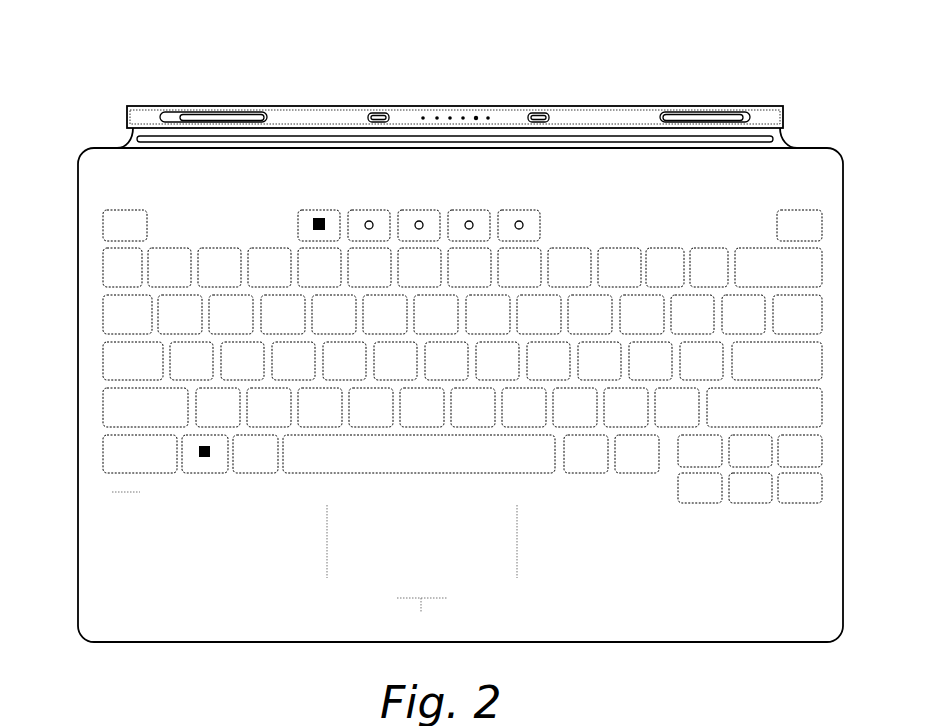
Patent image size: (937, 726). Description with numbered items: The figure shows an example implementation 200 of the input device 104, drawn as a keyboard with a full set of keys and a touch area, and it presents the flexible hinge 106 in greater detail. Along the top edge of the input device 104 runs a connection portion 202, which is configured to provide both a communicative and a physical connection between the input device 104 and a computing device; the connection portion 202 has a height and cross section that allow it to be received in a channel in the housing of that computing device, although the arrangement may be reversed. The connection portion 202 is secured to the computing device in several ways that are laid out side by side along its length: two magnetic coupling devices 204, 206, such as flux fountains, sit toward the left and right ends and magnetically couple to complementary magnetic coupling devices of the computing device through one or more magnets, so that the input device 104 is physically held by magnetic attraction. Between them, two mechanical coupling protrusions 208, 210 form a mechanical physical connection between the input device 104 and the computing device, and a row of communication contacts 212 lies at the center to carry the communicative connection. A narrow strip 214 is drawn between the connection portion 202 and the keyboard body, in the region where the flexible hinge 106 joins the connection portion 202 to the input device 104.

The example implementation 200 is at (145, 62).
The input device 104 is at (143, 627).
The flexible hinge 106 is at (795, 128).
The connection portion 202 is at (142, 106).
The magnetic coupling device 204 is at (212, 117).
The magnetic coupling device 206 is at (703, 118).
The mechanical coupling protrusion 208 is at (377, 113).
The mechanical coupling protrusion 210 is at (540, 113).
The communication contacts 212 is at (465, 88).
The flexible strip 214 is at (605, 140).